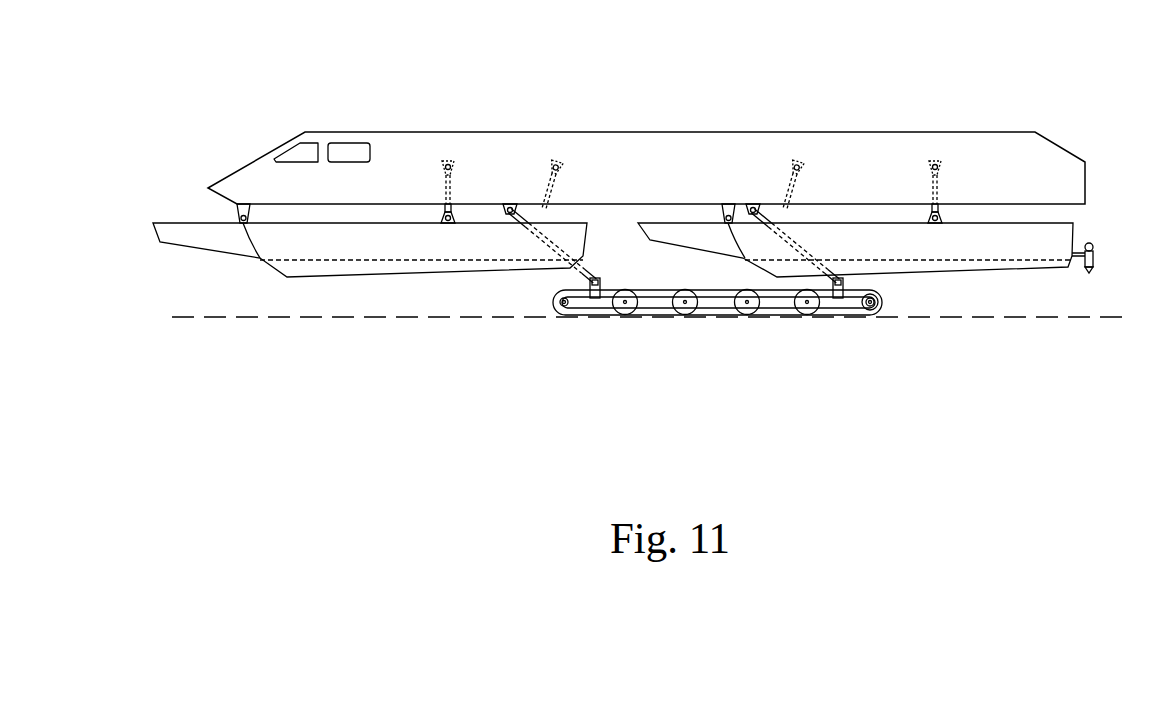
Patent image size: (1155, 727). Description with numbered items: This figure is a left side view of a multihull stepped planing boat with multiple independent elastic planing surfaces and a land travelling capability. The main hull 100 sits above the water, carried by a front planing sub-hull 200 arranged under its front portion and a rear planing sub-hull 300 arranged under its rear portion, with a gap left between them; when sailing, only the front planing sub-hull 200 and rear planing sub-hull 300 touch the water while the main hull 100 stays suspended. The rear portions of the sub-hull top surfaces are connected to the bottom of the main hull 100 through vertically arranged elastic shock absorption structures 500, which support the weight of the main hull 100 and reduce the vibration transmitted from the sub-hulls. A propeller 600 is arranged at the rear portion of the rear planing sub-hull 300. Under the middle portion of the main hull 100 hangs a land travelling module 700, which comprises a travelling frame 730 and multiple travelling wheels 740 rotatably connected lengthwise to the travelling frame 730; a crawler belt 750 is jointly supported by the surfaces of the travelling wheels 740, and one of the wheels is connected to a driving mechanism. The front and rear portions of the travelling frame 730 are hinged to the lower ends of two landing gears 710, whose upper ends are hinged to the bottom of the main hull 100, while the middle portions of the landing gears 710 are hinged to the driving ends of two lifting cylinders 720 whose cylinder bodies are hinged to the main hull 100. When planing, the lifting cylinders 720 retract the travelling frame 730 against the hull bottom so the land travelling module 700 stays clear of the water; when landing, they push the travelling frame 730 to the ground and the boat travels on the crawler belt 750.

The main hull 100 is at (412, 158).
The front planing sub-hull 200 is at (310, 240).
The rear planing sub-hull 300 is at (1030, 247).
The elastic shock absorption structure 500 is at (940, 185).
The propeller 600 is at (1088, 272).
The land travelling module 700 is at (721, 354).
The landing gear 710 is at (802, 253).
The lifting cylinder 720 is at (547, 203).
The travelling frame 730 is at (655, 303).
The travelling wheel 740 is at (807, 312).
The crawler belt 750 is at (575, 317).